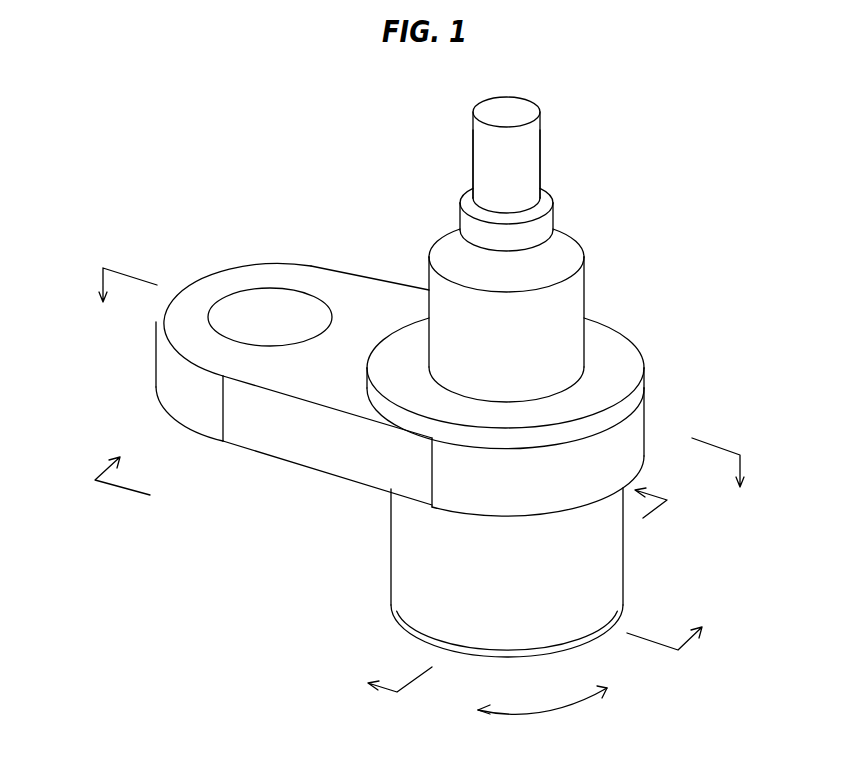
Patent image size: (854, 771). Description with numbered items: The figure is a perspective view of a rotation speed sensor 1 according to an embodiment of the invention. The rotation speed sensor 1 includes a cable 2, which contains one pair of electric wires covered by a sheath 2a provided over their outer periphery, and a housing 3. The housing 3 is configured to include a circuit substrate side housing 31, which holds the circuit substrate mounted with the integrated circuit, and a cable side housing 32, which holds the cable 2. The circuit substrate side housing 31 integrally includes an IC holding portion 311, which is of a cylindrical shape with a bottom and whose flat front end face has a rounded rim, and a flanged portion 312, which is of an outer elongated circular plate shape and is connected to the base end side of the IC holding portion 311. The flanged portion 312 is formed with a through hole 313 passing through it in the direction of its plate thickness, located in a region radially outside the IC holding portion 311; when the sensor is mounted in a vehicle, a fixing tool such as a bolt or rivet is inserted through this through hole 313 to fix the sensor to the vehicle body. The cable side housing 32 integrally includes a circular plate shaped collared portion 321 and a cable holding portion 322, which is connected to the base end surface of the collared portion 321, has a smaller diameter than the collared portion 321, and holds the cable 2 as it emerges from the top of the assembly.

The rotation speed sensor 1 is at (676, 138).
The cable 2 is at (540, 132).
The sheath 2a is at (530, 170).
The housing 3 is at (760, 297).
The circuit substrate side housing 31 is at (727, 370).
The cable side housing 32 is at (727, 278).
The IC holding portion 311 is at (630, 482).
The flanged portion 312 is at (647, 410).
The through hole 313 is at (266, 306).
The collared portion 321 is at (645, 348).
The cable holding portion 322 is at (584, 277).